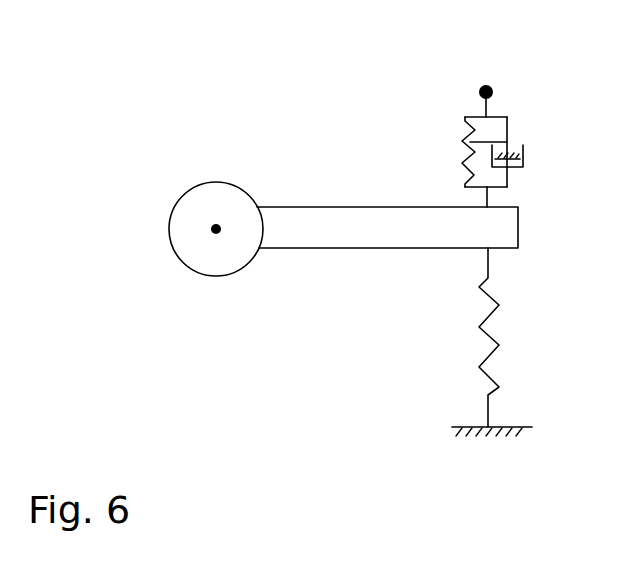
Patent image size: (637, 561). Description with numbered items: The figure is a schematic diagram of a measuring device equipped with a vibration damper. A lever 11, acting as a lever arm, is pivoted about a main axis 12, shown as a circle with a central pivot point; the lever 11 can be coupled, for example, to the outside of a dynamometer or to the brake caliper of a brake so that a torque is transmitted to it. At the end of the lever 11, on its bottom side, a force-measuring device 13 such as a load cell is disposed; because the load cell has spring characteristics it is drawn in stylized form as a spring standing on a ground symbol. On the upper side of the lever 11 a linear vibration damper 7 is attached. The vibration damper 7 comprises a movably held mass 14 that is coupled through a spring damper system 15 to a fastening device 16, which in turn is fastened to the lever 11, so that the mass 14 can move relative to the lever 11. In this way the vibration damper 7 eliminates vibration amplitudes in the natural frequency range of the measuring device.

The linear vibration damper 7 is at (493, 117).
The lever 11 is at (325, 218).
The main axis 12 is at (215, 228).
The force-measuring device 13 is at (488, 320).
The movably held mass 14 is at (480, 88).
The spring damper system 15 is at (470, 153).
The fastening device 16 is at (481, 198).